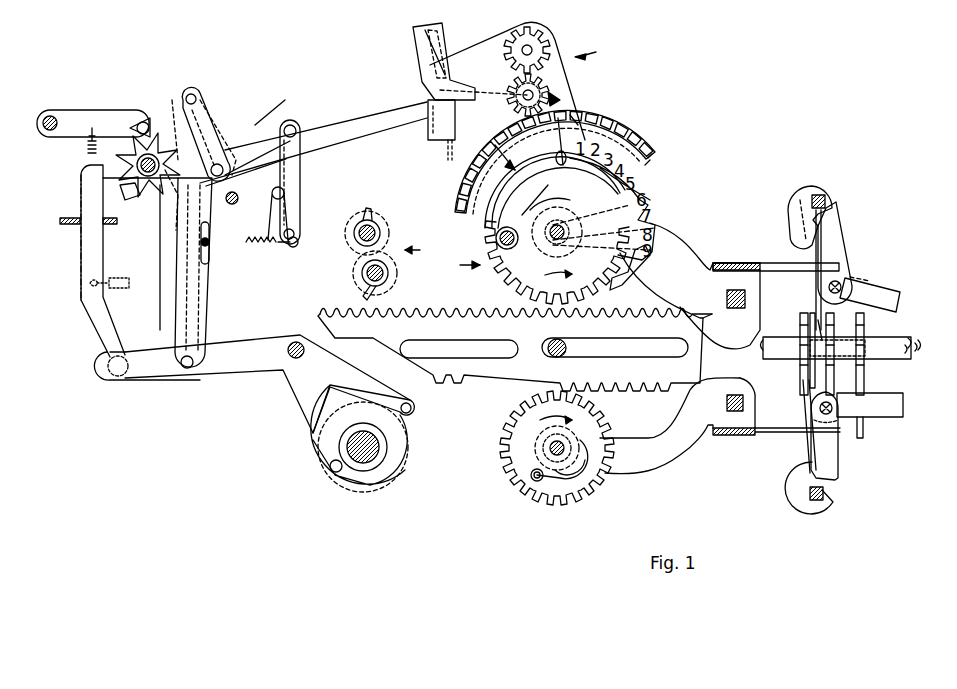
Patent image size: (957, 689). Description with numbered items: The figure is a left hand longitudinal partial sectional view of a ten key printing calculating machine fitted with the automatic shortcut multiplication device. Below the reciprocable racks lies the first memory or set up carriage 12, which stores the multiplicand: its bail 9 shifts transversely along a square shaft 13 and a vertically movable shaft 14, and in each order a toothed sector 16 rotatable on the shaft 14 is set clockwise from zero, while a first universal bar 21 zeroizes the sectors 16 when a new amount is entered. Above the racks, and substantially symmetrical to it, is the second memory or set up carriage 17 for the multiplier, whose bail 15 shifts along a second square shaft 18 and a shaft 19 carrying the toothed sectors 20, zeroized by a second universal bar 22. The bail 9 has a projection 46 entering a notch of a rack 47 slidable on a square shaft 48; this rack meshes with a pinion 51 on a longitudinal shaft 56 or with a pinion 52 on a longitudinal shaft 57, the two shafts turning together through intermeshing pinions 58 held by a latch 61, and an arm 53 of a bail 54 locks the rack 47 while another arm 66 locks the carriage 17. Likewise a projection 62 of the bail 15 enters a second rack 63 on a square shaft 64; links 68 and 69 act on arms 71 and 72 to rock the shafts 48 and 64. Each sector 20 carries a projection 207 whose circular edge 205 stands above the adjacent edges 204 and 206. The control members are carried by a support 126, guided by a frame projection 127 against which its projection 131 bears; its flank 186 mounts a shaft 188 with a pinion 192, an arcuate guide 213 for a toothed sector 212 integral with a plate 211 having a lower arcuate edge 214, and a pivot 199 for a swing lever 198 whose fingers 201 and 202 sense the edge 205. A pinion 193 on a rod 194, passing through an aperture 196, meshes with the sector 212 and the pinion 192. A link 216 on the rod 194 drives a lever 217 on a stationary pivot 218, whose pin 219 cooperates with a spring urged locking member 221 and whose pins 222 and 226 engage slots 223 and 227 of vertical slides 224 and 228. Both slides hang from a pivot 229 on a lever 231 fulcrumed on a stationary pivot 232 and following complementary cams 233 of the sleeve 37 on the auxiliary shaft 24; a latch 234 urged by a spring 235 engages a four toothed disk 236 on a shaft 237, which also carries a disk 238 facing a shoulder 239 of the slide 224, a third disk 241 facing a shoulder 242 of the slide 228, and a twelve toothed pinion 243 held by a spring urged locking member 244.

The spring urged locking member 244 is at (105, 120).
The pinion 243 is at (138, 122).
The disk 238 is at (160, 134).
The shaft 237 is at (152, 195).
The disk 236 is at (127, 190).
The third disk 241 is at (173, 100).
The shoulder 239 is at (176, 210).
The slot 223 is at (198, 96).
The pin 222 is at (205, 122).
The shoulder 242 is at (224, 160).
The first vertical slide 224 is at (158, 262).
The latch 234 is at (81, 266).
The spring 235 is at (124, 288).
The second vertical slide 228 is at (205, 295).
The slot 227 is at (208, 245).
The pin 226 is at (199, 250).
The lever 217 is at (230, 250).
The pin 219 is at (271, 205).
The stationary pivot 218 is at (262, 120).
The spring urged locking member 221 is at (300, 165).
The pivot 229 is at (187, 370).
The lever 231 is at (300, 392).
The stationary pivot 232 is at (296, 342).
The complementary cams 233 is at (402, 462).
The auxiliary shaft 24 is at (370, 462).
The sleeve 37 is at (358, 470).
The link 216 is at (386, 136).
The projection 131 is at (420, 60).
The projection 127 is at (440, 40).
The flank 186 is at (497, 43).
The pinion 192 is at (540, 40).
The shaft 188 is at (532, 50).
The support 126 is at (601, 51).
The pinion 193 is at (515, 90).
The rod 194 is at (516, 92).
The aperture 196 is at (555, 95).
The pivot 199 is at (570, 115).
The plate 211 is at (565, 122).
The swing lever 198 is at (580, 123).
The finger 202 is at (612, 130).
The toothed sector 212 is at (630, 148).
The arcuate guide 213 is at (644, 160).
The finger 201 is at (520, 168).
The lower arcuate edge 214 is at (520, 178).
The edge 204 is at (510, 200).
The second universal bar 22 is at (500, 236).
The projection 207 is at (546, 202).
The circular edge 205 is at (570, 225).
The shaft 19 is at (565, 233).
The toothed sector 20 is at (512, 283).
The second memory or set up carriage 17 is at (460, 266).
The edge 206 is at (620, 283).
The bail 15 is at (690, 286).
The second square shaft 18 is at (745, 298).
The projection 62 is at (770, 263).
The square shaft 64 is at (826, 200).
The arm 72 is at (836, 240).
The link 69 is at (875, 290).
The second rack 63 is at (814, 292).
The arm 66 is at (814, 315).
The longitudinal shaft 56 is at (763, 346).
The bail 54 is at (870, 340).
The longitudinal shaft 57 is at (908, 355).
The pinion 51 is at (799, 367).
The pinion 52 is at (833, 365).
The intermeshing pinions 58 is at (866, 370).
The arm 53 is at (808, 388).
The rack 47 is at (804, 407).
The link 68 is at (896, 405).
The latch 61 is at (864, 428).
The square shaft 13 is at (735, 390).
The projection 46 is at (765, 435).
The bail 9 is at (670, 426).
The arm 71 is at (838, 460).
The square shaft 48 is at (820, 498).
The first memory or set up carriage 12 is at (542, 513).
The shaft 14 is at (548, 445).
The toothed sector 16 is at (508, 448).
The first universal bar 21 is at (533, 482).